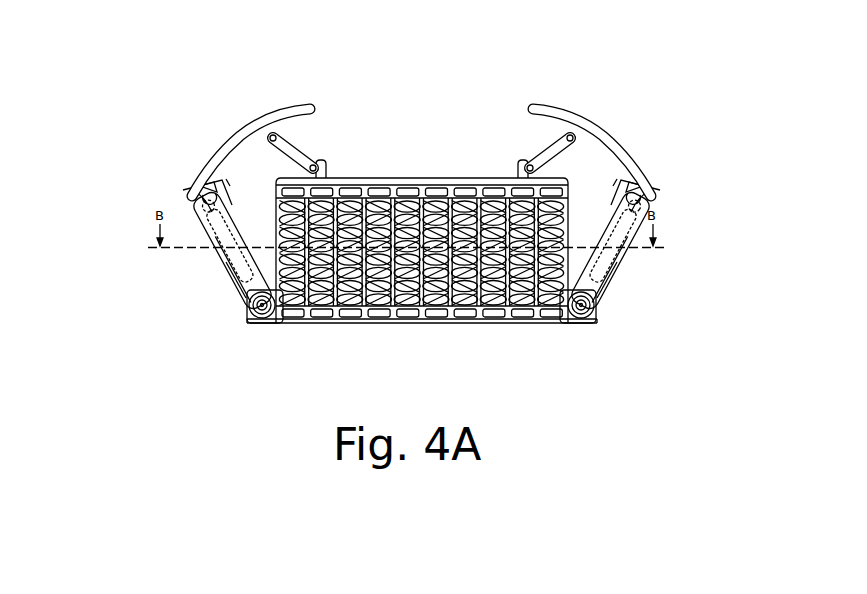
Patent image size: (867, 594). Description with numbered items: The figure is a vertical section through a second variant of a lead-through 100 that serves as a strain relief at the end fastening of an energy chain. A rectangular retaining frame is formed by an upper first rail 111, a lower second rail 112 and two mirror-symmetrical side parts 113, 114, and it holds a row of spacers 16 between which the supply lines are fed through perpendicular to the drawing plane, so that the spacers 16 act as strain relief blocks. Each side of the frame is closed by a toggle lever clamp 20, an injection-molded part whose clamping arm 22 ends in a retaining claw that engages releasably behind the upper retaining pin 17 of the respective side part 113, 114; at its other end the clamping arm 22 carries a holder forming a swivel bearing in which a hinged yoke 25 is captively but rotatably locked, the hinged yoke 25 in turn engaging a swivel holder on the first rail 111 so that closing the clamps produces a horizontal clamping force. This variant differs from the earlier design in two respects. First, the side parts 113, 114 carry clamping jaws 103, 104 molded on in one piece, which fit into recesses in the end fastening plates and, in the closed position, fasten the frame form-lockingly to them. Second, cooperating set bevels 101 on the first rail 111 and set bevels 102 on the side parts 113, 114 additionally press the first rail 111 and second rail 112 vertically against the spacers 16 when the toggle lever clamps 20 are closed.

The lead-through 100 is at (133, 70).
The toggle lever clamp 20 is at (222, 112).
The clamping arm 22 is at (262, 113).
The hinged yoke 25 is at (318, 158).
The set bevel 101 is at (282, 142).
The first rail 111 is at (405, 178).
The spacer 16 is at (352, 302).
The second rail 112 is at (485, 316).
The retaining pin 17 is at (251, 318).
The set bevel 102 is at (212, 192).
The clamping jaw 103 is at (210, 255).
The clamping jaw 104 is at (623, 257).
The side part 113 is at (235, 264).
The side part 114 is at (605, 258).